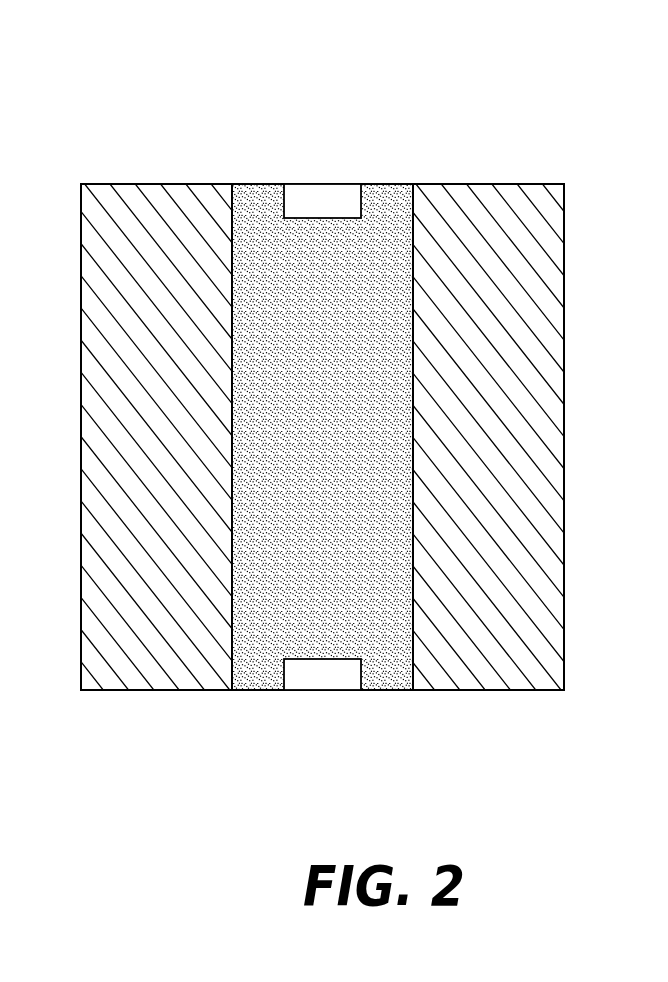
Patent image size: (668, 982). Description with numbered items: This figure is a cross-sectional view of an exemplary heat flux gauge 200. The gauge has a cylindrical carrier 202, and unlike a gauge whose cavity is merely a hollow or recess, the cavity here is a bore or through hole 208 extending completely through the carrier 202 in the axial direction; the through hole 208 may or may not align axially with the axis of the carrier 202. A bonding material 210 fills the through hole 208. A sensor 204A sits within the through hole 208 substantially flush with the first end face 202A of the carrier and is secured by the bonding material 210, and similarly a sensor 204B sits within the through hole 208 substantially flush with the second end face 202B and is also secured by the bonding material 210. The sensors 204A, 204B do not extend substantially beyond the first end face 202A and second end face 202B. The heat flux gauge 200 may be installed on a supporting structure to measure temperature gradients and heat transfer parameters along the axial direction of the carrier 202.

The heat flux gauge 200 is at (542, 100).
The cylindrical carrier 202 is at (81, 184).
The first end face 202A is at (548, 184).
The second end face 202B is at (535, 690).
The sensor 204A is at (302, 192).
The sensor 204B is at (315, 682).
The through hole 208 is at (412, 642).
The bonding material 210 is at (377, 198).